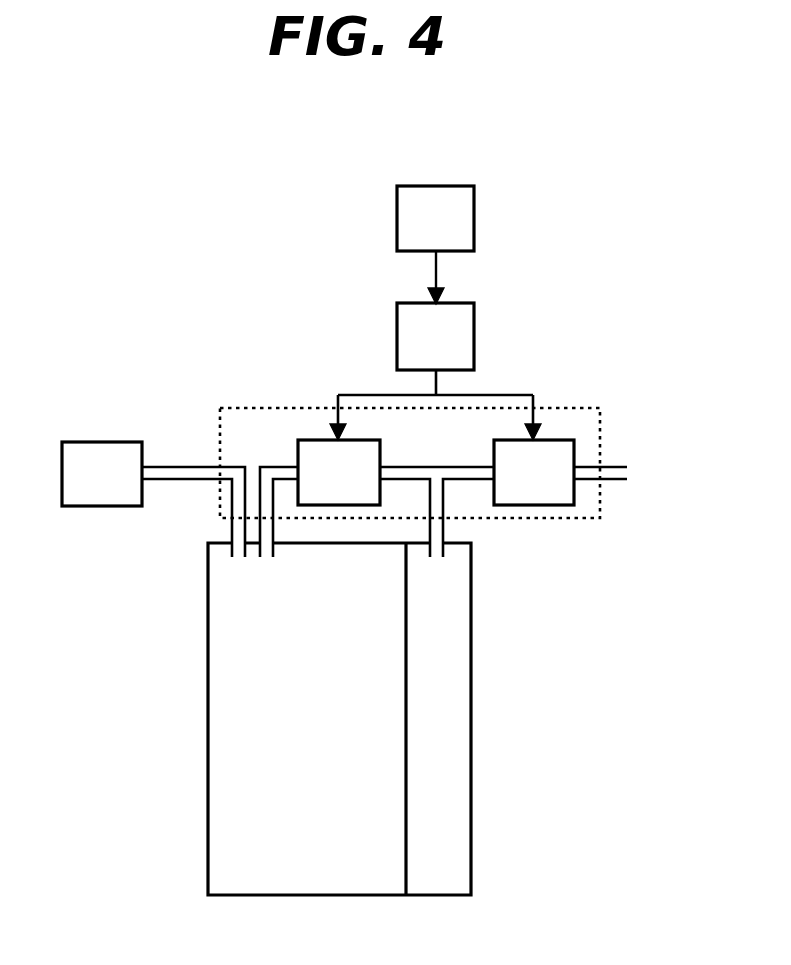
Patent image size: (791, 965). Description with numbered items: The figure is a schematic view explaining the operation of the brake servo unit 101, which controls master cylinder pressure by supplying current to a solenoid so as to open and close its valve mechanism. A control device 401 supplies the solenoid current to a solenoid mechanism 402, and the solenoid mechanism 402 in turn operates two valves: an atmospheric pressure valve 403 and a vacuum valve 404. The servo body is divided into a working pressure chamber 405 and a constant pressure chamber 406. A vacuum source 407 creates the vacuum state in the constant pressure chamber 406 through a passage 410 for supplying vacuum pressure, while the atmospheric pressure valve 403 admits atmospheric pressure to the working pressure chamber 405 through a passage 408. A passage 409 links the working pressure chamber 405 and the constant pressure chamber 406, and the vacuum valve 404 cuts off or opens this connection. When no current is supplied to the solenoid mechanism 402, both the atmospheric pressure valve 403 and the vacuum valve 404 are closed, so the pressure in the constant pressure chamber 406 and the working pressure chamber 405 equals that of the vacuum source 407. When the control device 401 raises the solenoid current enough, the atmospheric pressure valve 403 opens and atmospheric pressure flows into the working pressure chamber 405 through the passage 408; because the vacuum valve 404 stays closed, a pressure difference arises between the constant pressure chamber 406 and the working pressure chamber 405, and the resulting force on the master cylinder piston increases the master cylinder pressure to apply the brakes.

The servo 101 is at (432, 752).
The control device 401 is at (455, 186).
The solenoid mechanism 402 is at (455, 303).
The atmospheric pressure valve 403 is at (537, 505).
The vacuum valve 404 is at (315, 440).
The working pressure chamber 405 is at (440, 895).
The constant pressure chamber 406 is at (316, 895).
The vacuum source 407 is at (105, 506).
The passage for supplying atmospheric pressure 408 is at (610, 462).
The passage between the chambers 409 is at (420, 463).
The passage for supplying vacuum pressure 410 is at (186, 464).